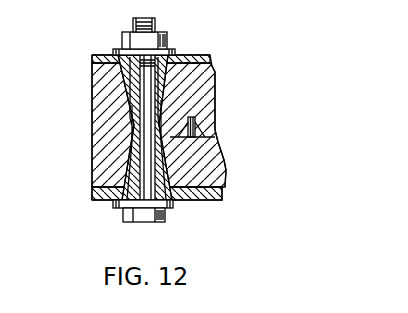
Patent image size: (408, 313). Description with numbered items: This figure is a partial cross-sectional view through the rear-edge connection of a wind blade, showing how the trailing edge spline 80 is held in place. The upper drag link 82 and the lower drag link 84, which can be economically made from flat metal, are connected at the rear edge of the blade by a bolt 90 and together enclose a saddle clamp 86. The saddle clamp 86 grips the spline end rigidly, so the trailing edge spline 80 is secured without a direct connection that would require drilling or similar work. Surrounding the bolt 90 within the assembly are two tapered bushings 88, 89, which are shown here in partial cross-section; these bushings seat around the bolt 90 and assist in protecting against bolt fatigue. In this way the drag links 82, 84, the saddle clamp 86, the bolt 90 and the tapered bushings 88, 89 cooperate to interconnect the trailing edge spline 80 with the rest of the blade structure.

The trailing edge spline 80 is at (208, 125).
The upper drag link 82 is at (193, 61).
The lower drag link 84 is at (200, 197).
The saddle clamp 86 is at (205, 88).
The tapered bushing 88 is at (132, 91).
The tapered bushing 89 is at (130, 178).
The bolt 90 is at (142, 106).